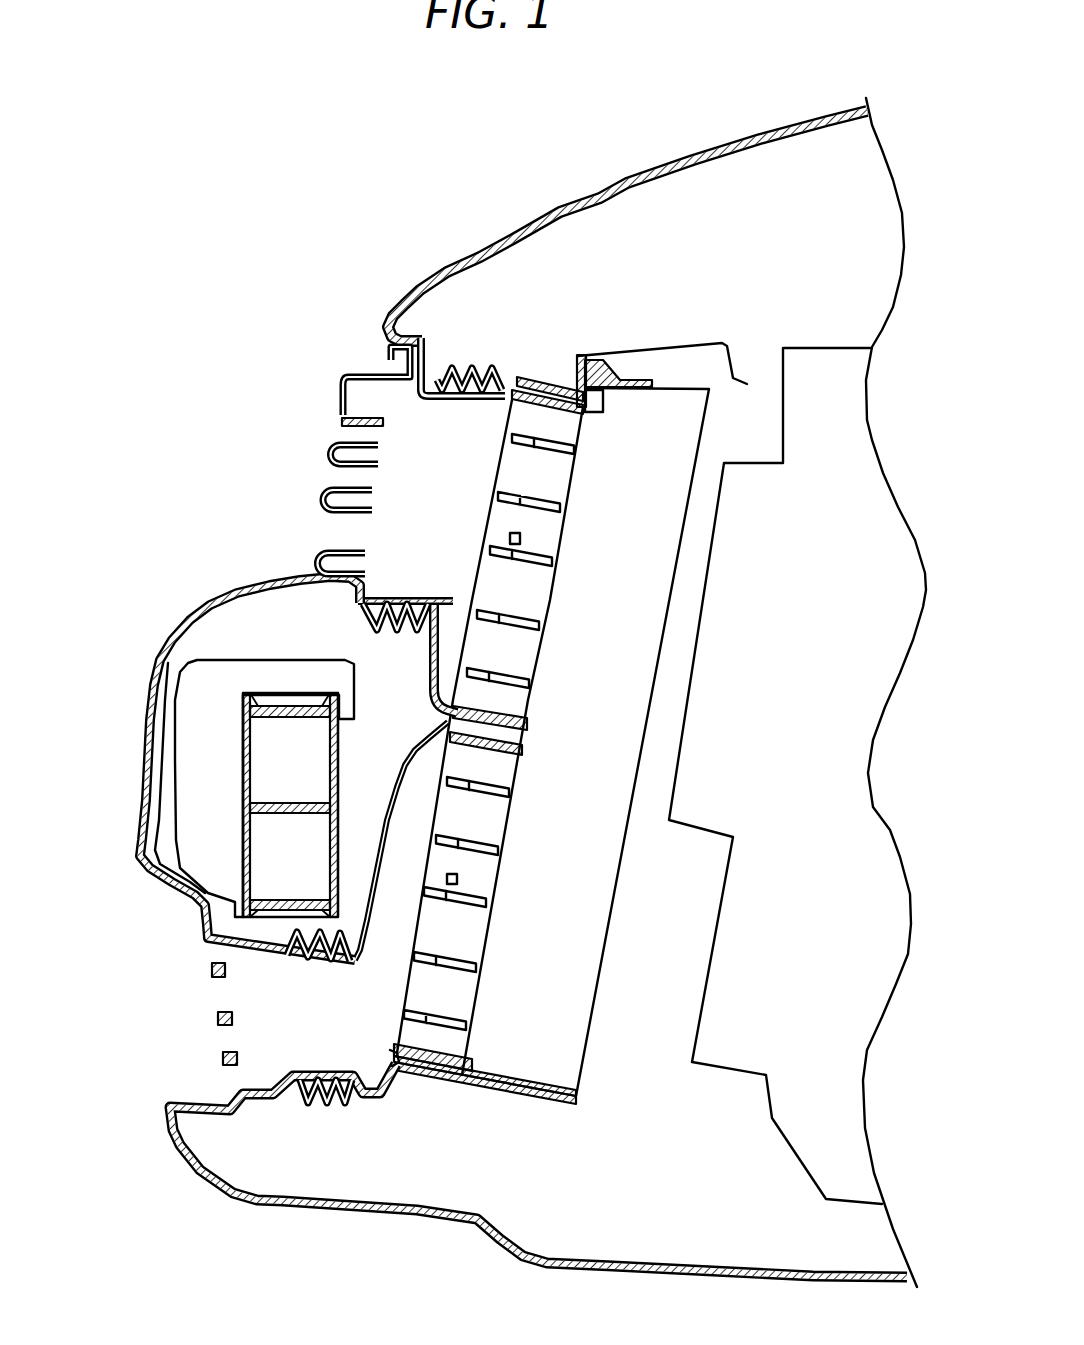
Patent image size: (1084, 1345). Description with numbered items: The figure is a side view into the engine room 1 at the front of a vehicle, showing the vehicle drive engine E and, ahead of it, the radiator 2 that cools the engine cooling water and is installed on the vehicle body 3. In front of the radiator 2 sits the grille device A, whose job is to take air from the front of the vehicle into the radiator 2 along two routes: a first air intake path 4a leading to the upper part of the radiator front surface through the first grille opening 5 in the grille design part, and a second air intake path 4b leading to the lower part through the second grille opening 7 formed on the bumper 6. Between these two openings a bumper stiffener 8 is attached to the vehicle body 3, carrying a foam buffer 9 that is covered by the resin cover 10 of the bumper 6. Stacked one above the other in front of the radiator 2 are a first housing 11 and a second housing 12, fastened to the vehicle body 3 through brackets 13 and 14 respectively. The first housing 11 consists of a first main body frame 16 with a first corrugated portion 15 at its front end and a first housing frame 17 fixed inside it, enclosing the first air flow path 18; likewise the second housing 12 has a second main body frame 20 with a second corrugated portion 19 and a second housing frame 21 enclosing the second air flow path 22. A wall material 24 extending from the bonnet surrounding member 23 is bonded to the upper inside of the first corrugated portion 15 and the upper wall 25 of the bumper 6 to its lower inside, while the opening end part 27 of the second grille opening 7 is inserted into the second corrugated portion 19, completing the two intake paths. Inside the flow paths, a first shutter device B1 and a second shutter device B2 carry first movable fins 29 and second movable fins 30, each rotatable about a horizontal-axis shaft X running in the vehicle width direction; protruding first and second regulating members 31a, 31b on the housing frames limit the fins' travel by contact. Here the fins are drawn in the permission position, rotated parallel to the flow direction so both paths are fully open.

The engine room 1 is at (772, 243).
The radiator 2 is at (678, 368).
The vehicle body 3 is at (617, 356).
The first air intake path 4a is at (373, 439).
The second air intake path 4b is at (241, 1045).
The first grille opening 5 is at (328, 528).
The bumper 6 is at (130, 815).
The second grille opening 7 is at (198, 995).
The bumper stiffener 8 is at (255, 692).
The foam buffer 9 is at (166, 664).
The resin cover 10 is at (150, 712).
The first housing 11 is at (506, 362).
The second housing 12 is at (388, 1097).
The bracket 13 is at (537, 378).
The bracket 14 is at (495, 1092).
The first corrugated portion 15 is at (363, 628).
The first main body frame 16 is at (430, 663).
The first housing frame 17 is at (603, 412).
The first air flow path 18 is at (538, 673).
The second corrugated portion 19 is at (335, 1102).
The second main body frame 20 is at (410, 735).
The second housing frame 21 is at (390, 1053).
The second air flow path 22 is at (455, 940).
The bonnet surrounding member 23 is at (638, 176).
The wall material 24 is at (478, 400).
The upper wall 25 is at (380, 592).
The opening end part 27 is at (333, 968).
The first movable fin 29 is at (543, 488).
The second movable fin 30 is at (493, 797).
The first regulating member 31a is at (540, 566).
The second regulating member 31b is at (521, 541).
The grille device A is at (251, 562).
The first shutter device B1 is at (520, 665).
The second shutter device B2 is at (527, 775).
The vehicle drive engine E is at (822, 348).
The horizontal-axis shaft X is at (508, 604).